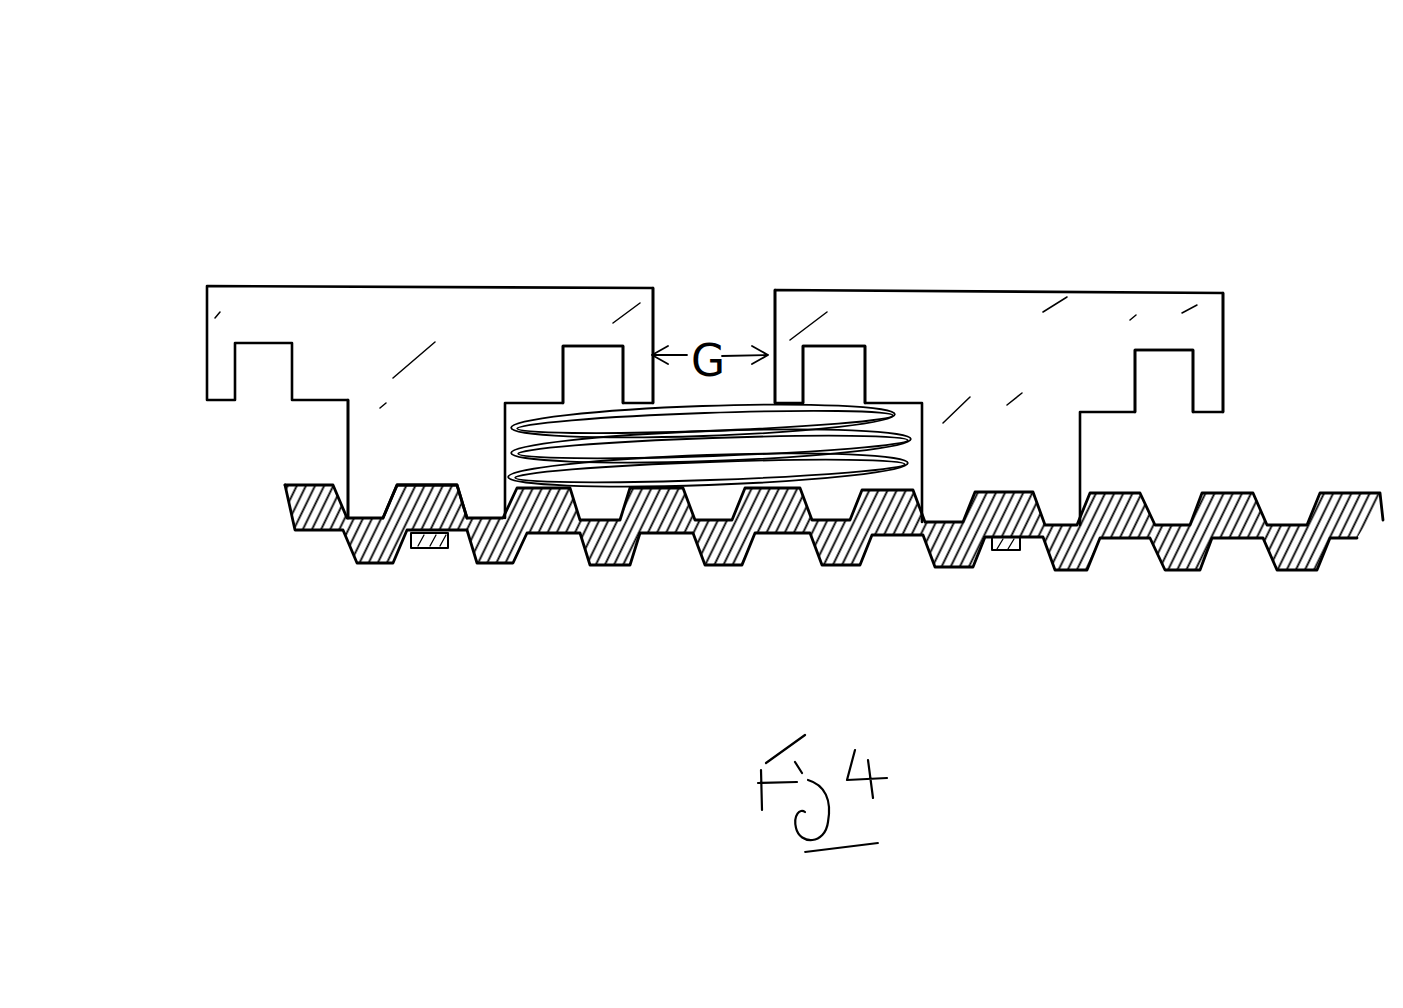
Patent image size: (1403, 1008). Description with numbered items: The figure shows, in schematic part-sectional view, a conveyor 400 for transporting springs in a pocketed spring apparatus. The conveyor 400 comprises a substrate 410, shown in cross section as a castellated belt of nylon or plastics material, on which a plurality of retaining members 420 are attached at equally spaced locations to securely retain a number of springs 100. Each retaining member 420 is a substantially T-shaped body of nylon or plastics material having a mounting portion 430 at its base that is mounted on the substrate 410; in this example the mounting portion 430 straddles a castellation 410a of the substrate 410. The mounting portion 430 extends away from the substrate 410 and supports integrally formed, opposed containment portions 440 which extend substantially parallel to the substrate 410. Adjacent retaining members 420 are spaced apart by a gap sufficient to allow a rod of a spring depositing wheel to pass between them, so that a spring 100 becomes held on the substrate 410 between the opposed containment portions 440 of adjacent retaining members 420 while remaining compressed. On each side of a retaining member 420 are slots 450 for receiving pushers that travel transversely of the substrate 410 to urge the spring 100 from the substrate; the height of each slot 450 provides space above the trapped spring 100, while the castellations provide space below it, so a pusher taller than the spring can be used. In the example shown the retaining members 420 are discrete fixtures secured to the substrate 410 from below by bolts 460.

The conveyor 400 is at (1248, 206).
The substrate 410 is at (1062, 552).
The castellation 410a is at (427, 507).
The retaining member 420 is at (412, 285).
The mounting portion 430 is at (372, 467).
The containment portion 440 is at (648, 345).
The slot 450 is at (592, 373).
The bolt 460 is at (440, 550).
The spring 100 is at (596, 458).